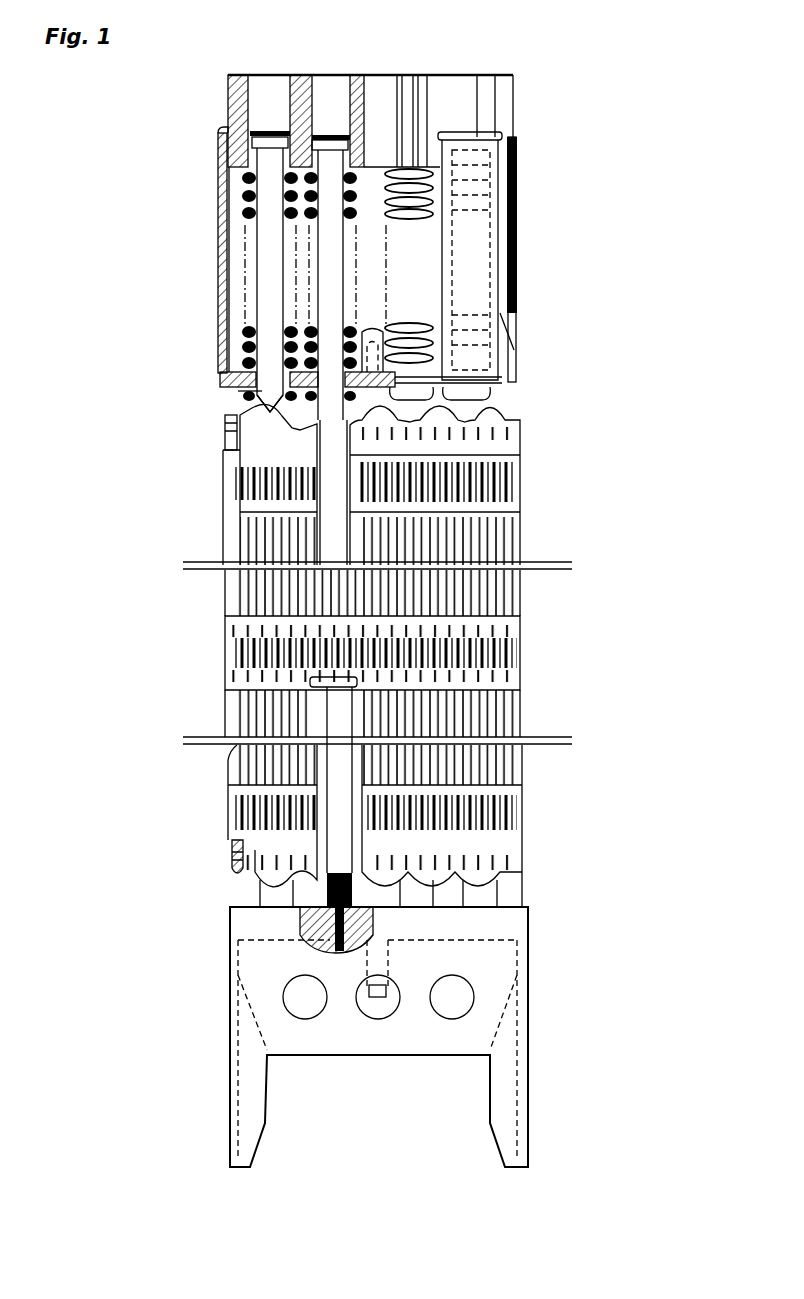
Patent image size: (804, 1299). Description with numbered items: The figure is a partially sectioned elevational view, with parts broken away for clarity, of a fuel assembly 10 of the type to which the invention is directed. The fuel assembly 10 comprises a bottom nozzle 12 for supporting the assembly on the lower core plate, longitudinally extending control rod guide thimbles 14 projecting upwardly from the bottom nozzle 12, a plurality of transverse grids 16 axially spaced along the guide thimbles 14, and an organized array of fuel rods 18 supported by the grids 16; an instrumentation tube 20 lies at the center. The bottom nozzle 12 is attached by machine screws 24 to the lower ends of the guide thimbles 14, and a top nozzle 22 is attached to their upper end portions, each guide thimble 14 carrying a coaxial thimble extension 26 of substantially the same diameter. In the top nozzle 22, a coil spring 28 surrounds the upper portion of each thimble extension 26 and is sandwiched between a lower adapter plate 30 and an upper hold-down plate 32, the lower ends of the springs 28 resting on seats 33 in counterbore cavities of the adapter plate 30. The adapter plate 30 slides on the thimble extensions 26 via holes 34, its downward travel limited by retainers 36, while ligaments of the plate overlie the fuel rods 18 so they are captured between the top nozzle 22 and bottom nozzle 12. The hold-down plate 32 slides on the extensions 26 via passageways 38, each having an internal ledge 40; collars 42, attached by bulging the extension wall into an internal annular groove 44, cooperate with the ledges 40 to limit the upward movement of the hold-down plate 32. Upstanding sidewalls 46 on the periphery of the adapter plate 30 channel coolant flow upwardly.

The fuel assembly 10 is at (612, 478).
The bottom nozzle 12 is at (530, 958).
The control rod guide thimbles 14 is at (338, 492).
The transverse grids 16 is at (512, 462).
The fuel rods 18 is at (230, 845).
The instrumentation tube 20 is at (410, 480).
The top nozzle 22 is at (585, 190).
The machine screws 24 is at (320, 913).
The guide thimble extension 26 is at (273, 392).
The coil spring 28 is at (248, 345).
The lower adapter plate 30 is at (510, 384).
The upper hold-down plate 32 is at (228, 100).
The seats 33 is at (248, 385).
The holes 34 is at (247, 397).
The retainers 36 is at (293, 420).
The passageways 38 is at (270, 98).
The internal ledge 40 is at (220, 167).
The retainer collar 42 is at (222, 153).
The internal annular groove 44 is at (272, 135).
The upstanding sidewalls 46 is at (218, 253).